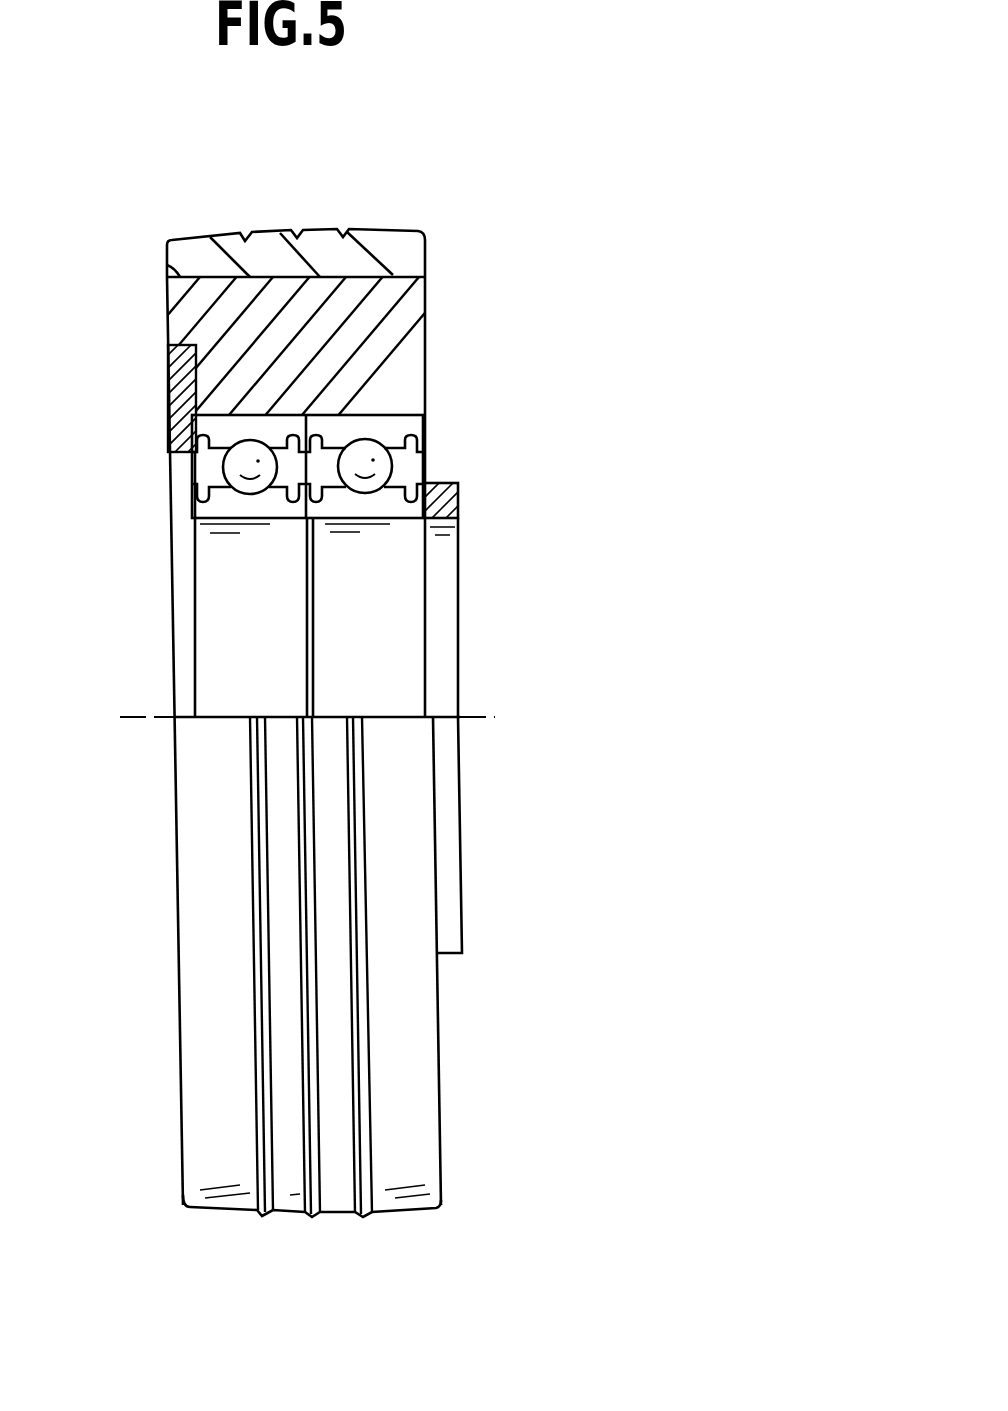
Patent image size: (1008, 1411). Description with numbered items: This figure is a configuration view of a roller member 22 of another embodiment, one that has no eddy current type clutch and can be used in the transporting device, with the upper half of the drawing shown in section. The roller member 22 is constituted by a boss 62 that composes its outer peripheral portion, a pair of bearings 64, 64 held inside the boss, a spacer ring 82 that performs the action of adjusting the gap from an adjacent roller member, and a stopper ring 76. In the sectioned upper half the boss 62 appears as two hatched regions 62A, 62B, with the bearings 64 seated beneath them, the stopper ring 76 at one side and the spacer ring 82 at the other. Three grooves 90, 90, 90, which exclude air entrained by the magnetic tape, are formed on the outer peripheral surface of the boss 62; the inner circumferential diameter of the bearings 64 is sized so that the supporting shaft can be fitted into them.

The roller member 22 is at (750, 373).
The boss 62 is at (608, 228).
The outer ring body portion 62A is at (427, 345).
The outer ring belt engaging portion 62B is at (427, 263).
The bearings 64 is at (213, 467).
The stopper ring 76 is at (177, 390).
The spacer ring 82 is at (462, 612).
The grooves 90 is at (247, 237).